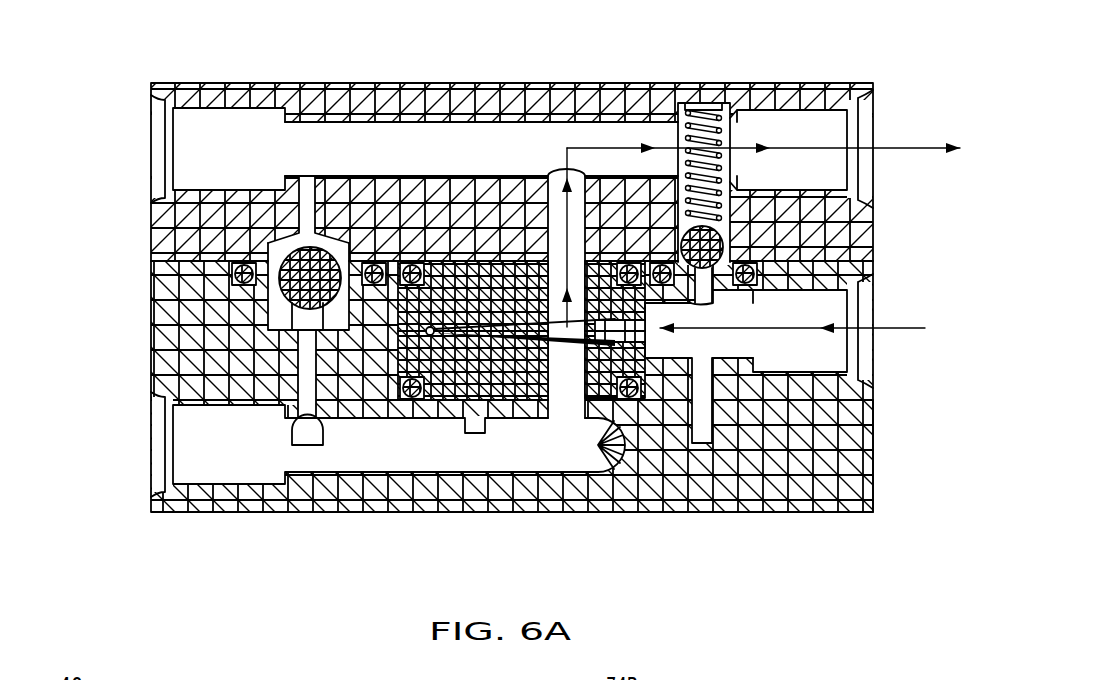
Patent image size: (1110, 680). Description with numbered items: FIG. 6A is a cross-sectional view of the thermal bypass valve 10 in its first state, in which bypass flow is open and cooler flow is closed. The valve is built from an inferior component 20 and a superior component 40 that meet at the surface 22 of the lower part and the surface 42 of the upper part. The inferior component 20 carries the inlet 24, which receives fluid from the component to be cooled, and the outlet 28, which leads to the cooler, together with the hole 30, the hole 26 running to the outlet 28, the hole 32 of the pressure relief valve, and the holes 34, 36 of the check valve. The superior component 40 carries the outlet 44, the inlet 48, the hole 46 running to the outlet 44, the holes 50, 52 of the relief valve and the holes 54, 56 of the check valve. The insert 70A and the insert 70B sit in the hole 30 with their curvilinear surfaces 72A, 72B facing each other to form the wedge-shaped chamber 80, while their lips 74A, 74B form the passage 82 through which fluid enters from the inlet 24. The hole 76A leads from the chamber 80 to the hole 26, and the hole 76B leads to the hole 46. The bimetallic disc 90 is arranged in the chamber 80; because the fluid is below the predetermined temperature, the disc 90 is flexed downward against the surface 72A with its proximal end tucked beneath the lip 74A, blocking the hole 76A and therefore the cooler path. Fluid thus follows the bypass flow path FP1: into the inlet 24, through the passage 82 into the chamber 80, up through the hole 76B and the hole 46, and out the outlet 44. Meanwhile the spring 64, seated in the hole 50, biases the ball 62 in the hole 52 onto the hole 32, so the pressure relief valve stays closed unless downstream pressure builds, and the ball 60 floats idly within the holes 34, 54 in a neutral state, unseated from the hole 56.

The thermal bypass valve 10 is at (145, 80).
The inferior component 20 is at (860, 462).
The surface 22 is at (160, 273).
The inlet 24 is at (868, 302).
The hole 26 is at (612, 415).
The outlet 28 is at (162, 444).
The hole 30 is at (645, 342).
The hole 32 is at (754, 327).
The hole 34 is at (268, 303).
The hole 36 is at (297, 347).
The superior component 40 is at (406, 100).
The surface 42 is at (168, 260).
The outlet 44 is at (868, 124).
The hole 46 is at (600, 183).
The inlet 48 is at (162, 135).
The hole 50 is at (728, 125).
The hole 52 is at (727, 217).
The hole 54 is at (262, 248).
The hole 56 is at (296, 205).
The ball 60 is at (310, 268).
The ball 62 is at (707, 248).
The spring 64 is at (682, 118).
The insert 70A is at (445, 382).
The insert 70B is at (443, 283).
The surface 72A is at (487, 340).
The surface 72B is at (543, 295).
The lip 74A is at (647, 345).
The lip 74B is at (630, 325).
The hole 76A is at (547, 347).
The hole 76B is at (547, 322).
The chamber 80 is at (576, 306).
The passage 82 is at (603, 358).
The bimetallic disc 90 is at (520, 333).
The bypass flow path FP1 is at (817, 147).